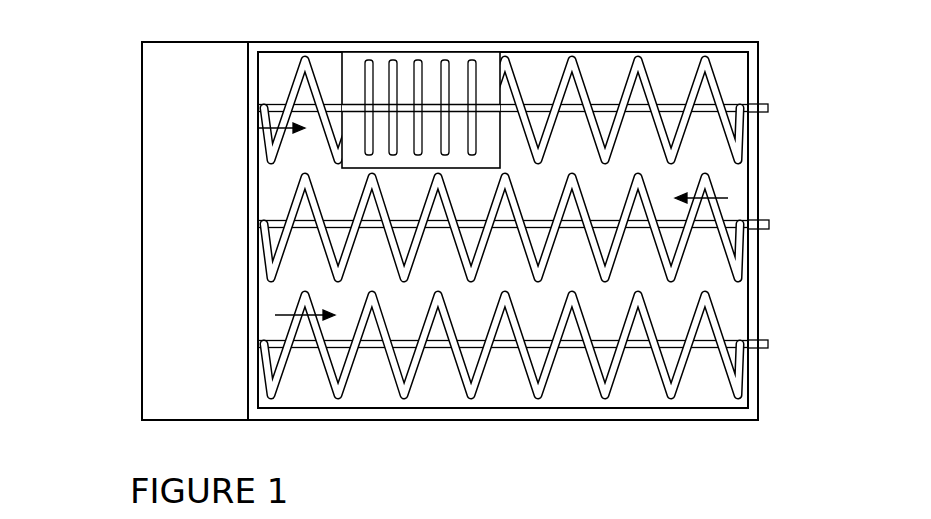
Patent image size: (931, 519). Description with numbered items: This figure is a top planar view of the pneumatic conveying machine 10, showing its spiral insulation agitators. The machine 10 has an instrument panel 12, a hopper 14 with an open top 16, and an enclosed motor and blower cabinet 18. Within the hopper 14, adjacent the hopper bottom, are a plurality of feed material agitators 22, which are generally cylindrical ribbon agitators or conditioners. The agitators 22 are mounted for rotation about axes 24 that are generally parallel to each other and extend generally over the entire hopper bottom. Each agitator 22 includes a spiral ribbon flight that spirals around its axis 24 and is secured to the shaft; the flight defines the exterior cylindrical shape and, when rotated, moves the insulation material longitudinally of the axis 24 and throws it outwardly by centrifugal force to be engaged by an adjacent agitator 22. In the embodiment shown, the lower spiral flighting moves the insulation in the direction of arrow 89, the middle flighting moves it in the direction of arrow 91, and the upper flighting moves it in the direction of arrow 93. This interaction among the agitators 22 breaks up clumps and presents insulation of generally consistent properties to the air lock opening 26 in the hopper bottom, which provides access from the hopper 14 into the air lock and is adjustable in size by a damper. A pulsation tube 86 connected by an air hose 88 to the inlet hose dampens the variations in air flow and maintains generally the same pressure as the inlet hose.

The pneumatic conveying machine 10 is at (118, 118).
The instrument panel 12 is at (170, 192).
The hopper 14 is at (612, 421).
The open top 16 is at (732, 322).
The motor and blower cabinet 18 is at (343, 421).
The feed material agitators 22 is at (583, 197).
The axes 24 is at (768, 114).
The air lock opening 26 is at (277, 88).
The pulsation tube 86 is at (723, 91).
The air hose 88 is at (768, 111).
The arrow 89 is at (368, 373).
The arrow 91 is at (578, 253).
The arrow 93 is at (572, 147).